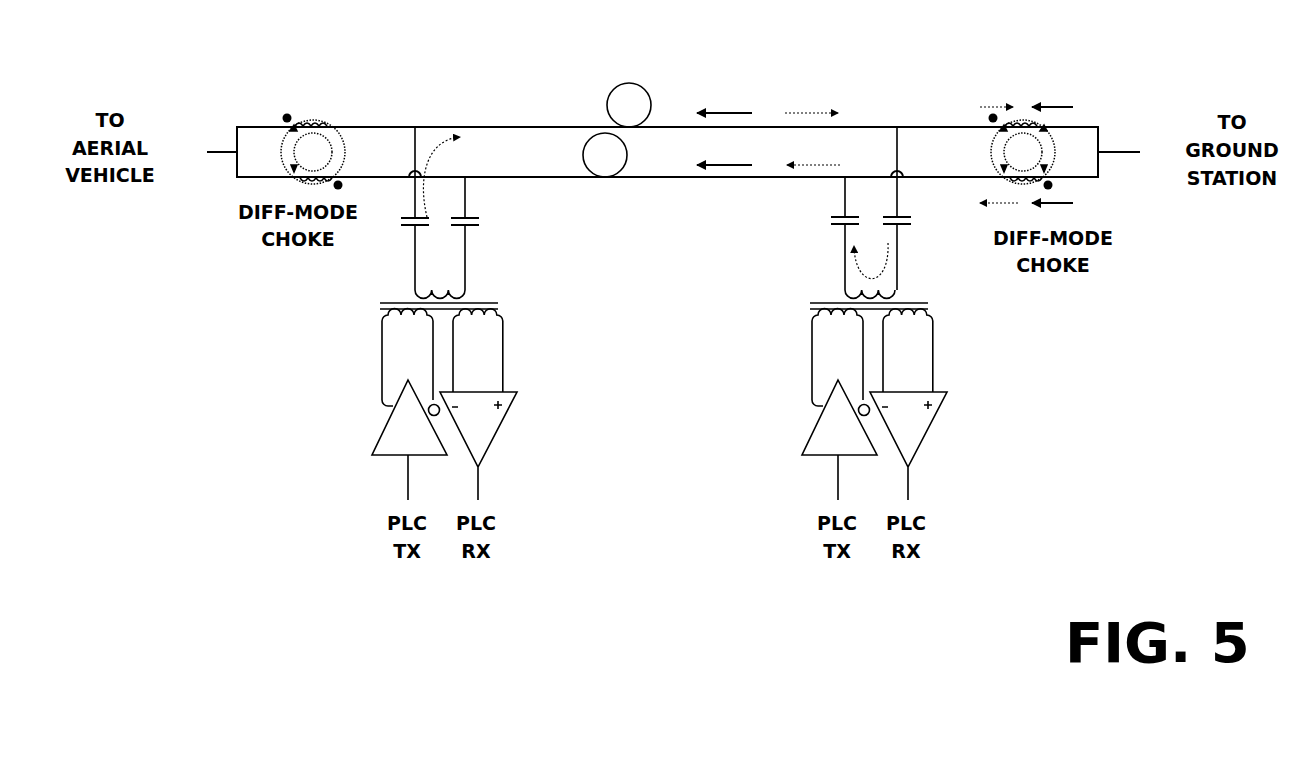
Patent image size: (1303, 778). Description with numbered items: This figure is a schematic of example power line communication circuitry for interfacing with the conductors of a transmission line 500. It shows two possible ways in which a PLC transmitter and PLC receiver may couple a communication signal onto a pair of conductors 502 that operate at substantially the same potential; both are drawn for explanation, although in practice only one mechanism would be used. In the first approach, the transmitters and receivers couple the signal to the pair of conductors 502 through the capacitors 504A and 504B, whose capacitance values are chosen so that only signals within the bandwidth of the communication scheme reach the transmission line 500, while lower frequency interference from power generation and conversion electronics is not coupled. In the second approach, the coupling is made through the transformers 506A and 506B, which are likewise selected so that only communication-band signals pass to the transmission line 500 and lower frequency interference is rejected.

The transmission line 500 is at (523, 83).
The pair of conductors 502 is at (258, 171).
The capacitor 504A is at (440, 234).
The capacitor 504B is at (860, 213).
The transformer 506A is at (372, 311).
The transformer 506B is at (802, 311).